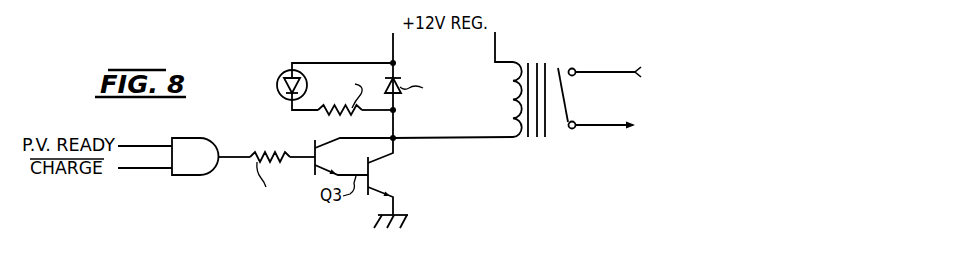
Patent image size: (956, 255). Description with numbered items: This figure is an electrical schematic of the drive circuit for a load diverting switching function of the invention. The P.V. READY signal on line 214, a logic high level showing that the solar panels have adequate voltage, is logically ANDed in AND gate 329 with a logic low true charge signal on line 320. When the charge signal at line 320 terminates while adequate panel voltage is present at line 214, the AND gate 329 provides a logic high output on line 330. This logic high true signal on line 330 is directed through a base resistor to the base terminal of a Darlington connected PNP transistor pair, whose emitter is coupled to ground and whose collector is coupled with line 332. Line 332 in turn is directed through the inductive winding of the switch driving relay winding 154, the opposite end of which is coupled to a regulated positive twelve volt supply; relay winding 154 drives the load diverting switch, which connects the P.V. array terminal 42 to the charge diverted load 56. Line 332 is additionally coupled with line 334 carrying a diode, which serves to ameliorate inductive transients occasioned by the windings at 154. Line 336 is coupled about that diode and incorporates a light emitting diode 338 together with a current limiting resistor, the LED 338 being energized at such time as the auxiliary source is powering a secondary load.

The line 214 is at (137, 146).
The line 320 is at (137, 168).
The AND gate 329 is at (205, 138).
The line 330 is at (236, 158).
The line 332 is at (456, 138).
The line 334 is at (399, 69).
The line 336 is at (343, 62).
The light emitting diode 338 is at (281, 74).
The switch driving relay winding 154 is at (567, 51).
The P.V. array positive terminal 42 is at (597, 72).
The charge diverted load 56 is at (654, 124).